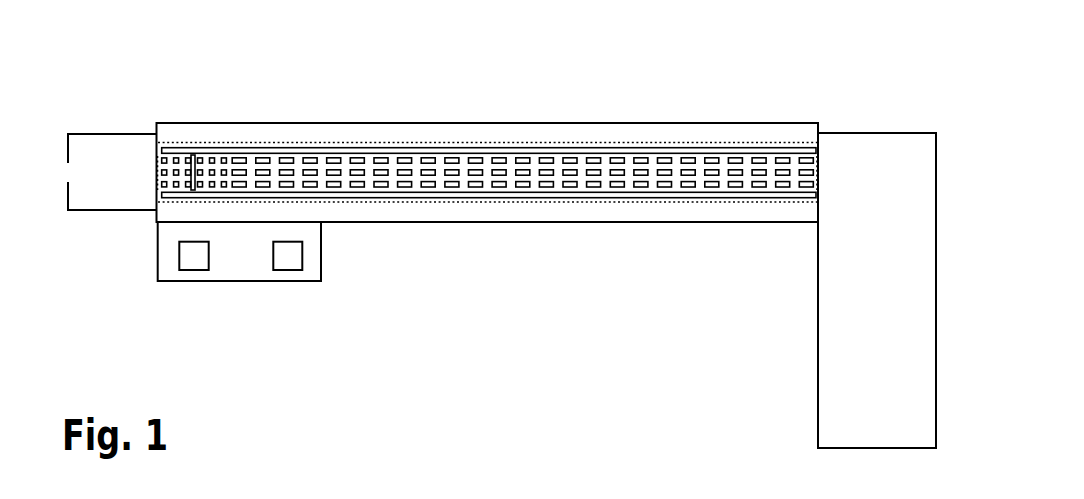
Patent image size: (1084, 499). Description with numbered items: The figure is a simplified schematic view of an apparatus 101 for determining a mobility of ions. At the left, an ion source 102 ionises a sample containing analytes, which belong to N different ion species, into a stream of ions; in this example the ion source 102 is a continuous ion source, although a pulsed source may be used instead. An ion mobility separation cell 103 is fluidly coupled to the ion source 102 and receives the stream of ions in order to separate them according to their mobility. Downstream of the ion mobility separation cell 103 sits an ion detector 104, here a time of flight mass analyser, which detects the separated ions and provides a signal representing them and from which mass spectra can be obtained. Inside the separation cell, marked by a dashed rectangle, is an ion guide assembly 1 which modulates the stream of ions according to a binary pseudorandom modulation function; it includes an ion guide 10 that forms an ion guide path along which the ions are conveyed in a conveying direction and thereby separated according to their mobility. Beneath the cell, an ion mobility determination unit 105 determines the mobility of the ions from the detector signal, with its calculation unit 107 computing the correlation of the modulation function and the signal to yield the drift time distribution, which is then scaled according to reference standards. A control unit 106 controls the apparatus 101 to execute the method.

The apparatus 101 is at (241, 84).
The ion source 102 is at (103, 137).
The ion mobility separation cell 103 is at (428, 133).
The ion detector 104 is at (823, 355).
The ion mobility determination unit 105 is at (192, 267).
The control unit 106 is at (287, 267).
The calculation unit 107 is at (183, 262).
The ion guide 10 is at (464, 199).
The ion guide assembly 1 is at (582, 202).